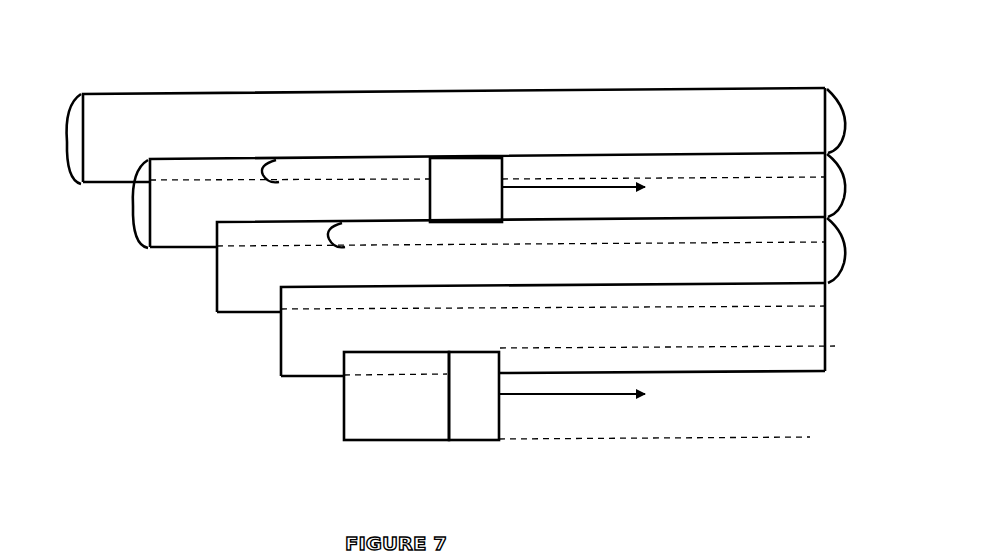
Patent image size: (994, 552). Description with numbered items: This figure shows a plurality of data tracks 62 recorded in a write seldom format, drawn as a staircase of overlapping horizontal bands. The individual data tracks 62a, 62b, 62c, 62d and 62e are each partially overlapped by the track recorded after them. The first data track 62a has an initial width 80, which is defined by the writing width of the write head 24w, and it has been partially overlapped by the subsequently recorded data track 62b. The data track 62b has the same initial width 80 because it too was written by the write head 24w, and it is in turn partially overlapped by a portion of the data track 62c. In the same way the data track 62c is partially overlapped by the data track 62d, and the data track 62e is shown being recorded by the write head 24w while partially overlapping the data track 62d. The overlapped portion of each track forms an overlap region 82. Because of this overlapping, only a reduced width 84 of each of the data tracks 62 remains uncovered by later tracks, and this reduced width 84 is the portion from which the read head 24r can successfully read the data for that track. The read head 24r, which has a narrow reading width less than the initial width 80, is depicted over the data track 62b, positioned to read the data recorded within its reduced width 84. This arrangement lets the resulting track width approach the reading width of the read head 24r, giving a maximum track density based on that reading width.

The data tracks 62 is at (109, 52).
The data track 62a is at (454, 135).
The data track 62b is at (487, 200).
The data track 62c is at (521, 264).
The data track 62d is at (558, 329).
The data track 62e is at (577, 396).
The read head 24r is at (537, 190).
The write head 24w is at (547, 396).
The initial width 80 is at (67, 141).
The overlap region 82 is at (260, 172).
The reduced width 84 is at (843, 137).